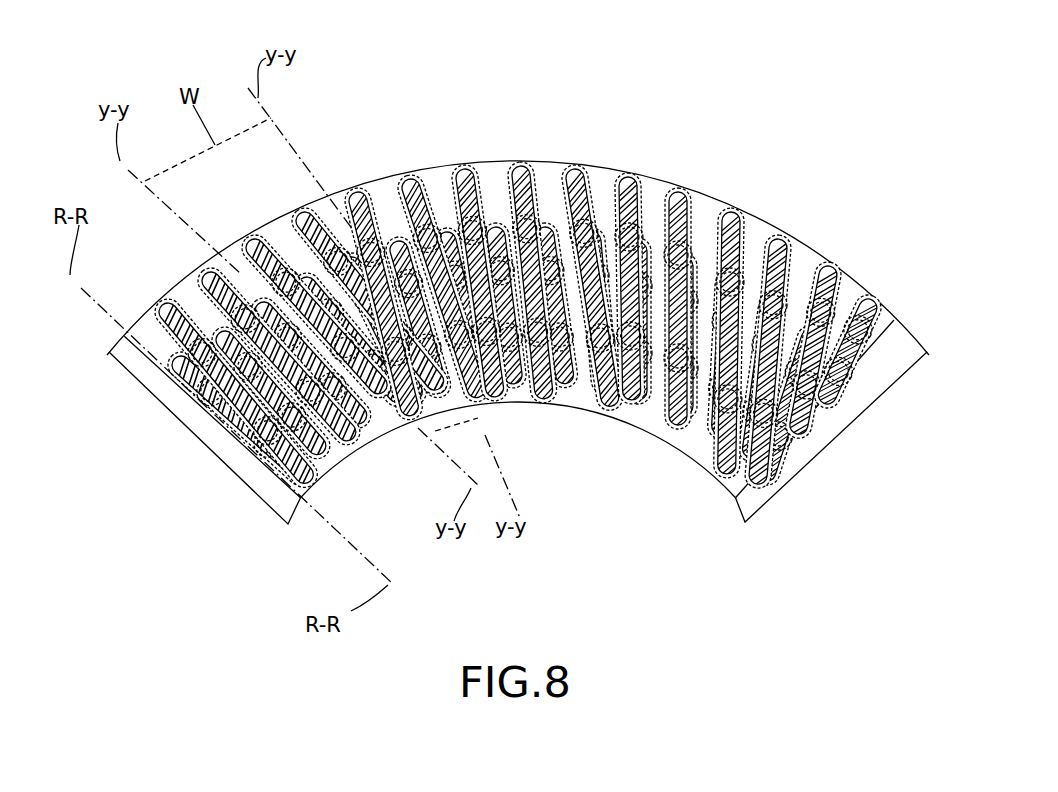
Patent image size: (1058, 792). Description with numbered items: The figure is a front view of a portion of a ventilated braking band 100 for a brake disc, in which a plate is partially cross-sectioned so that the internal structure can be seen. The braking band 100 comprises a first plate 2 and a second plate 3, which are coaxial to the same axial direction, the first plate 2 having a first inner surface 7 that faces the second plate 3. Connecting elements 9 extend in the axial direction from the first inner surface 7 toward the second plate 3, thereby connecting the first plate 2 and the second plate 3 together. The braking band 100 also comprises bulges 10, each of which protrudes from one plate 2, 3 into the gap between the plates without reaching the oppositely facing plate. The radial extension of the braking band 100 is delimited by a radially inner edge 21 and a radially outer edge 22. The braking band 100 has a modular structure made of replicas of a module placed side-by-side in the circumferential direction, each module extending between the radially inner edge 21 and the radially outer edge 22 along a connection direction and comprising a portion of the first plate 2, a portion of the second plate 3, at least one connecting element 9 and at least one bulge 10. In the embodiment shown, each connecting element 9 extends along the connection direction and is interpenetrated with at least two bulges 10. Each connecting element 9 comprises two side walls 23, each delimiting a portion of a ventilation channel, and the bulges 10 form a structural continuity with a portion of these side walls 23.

The ventilated braking band 100 is at (866, 126).
The first plate 2 is at (667, 177).
The second plate 3 is at (222, 430).
The first inner surface 7 is at (747, 233).
The connecting element 9 is at (237, 230).
The bulge 10 is at (225, 262).
The radially inner edge 21 is at (637, 420).
The radially outer edge 22 is at (850, 270).
The side wall 23 is at (280, 250).